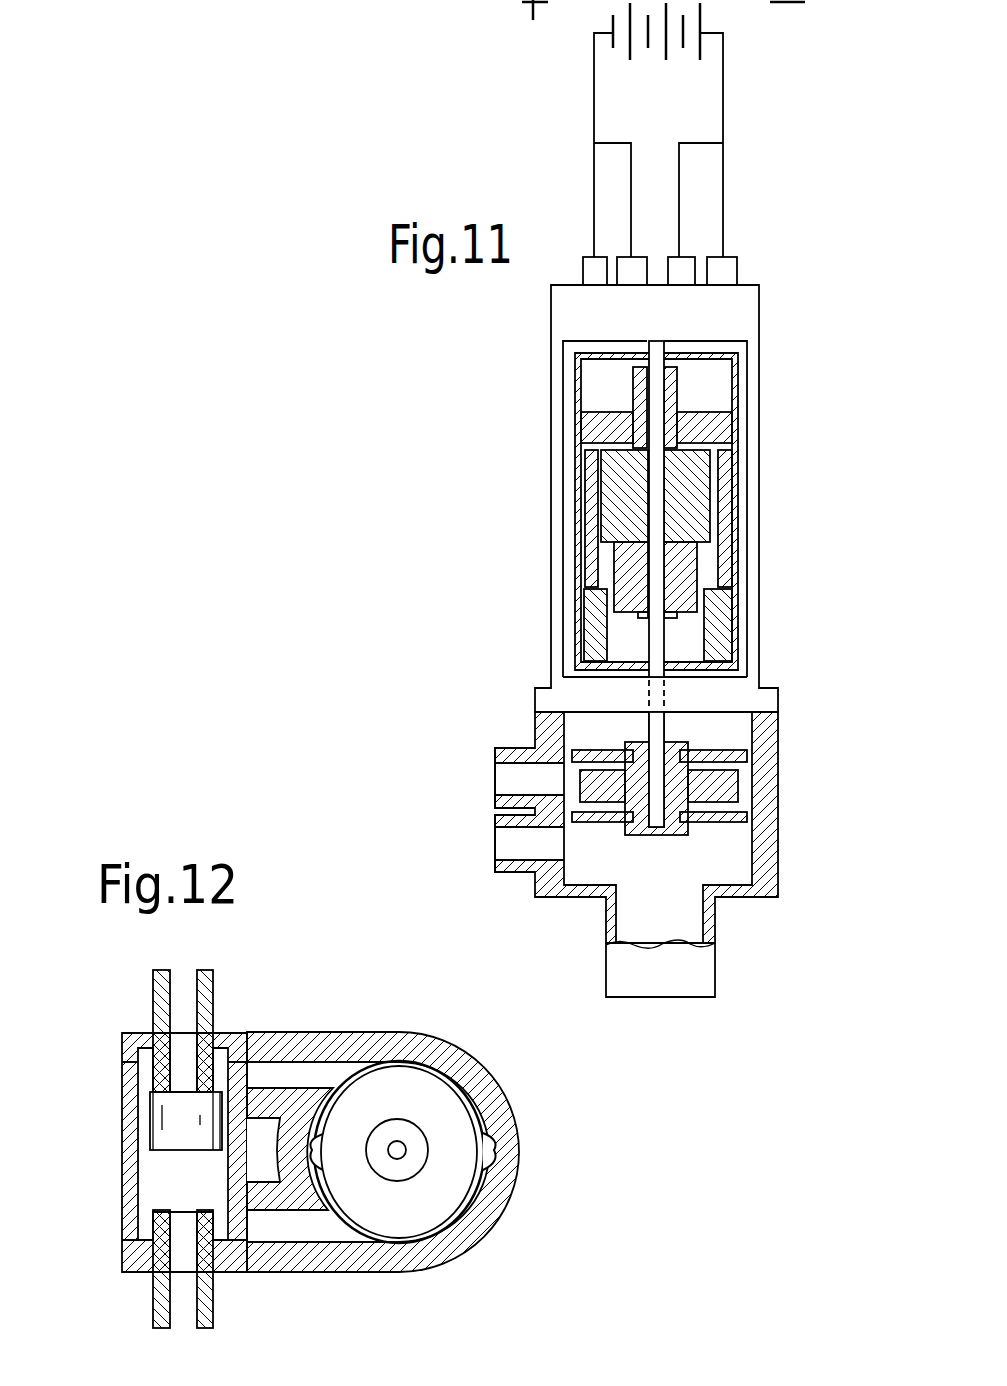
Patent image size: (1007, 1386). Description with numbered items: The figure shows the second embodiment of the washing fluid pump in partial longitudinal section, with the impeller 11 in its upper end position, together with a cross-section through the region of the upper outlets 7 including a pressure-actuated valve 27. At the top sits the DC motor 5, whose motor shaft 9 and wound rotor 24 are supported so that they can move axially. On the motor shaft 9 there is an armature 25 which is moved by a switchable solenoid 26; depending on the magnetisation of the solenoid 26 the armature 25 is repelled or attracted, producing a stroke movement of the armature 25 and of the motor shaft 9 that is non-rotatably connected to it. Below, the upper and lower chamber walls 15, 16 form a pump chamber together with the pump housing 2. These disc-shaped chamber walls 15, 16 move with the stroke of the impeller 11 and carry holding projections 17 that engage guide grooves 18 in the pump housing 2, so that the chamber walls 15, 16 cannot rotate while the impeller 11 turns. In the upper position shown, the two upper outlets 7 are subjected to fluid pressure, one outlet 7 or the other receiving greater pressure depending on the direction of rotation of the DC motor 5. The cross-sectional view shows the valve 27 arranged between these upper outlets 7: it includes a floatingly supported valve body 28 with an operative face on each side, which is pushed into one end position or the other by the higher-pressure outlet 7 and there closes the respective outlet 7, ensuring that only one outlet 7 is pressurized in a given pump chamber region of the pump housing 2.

In FIG. 12, the pump housing 2 is at (496, 1197).
In FIG. 11, the DC motor 5 is at (755, 422).
In FIG. 11, the upper outlets 7 is at (502, 771).
In FIG. 11, the motor shaft 9 is at (658, 832).
In FIG. 11, the impeller 11 is at (740, 780).
In FIG. 11, the upper chamber wall 15 is at (753, 752).
In FIG. 12, the upper chamber wall 15 is at (428, 1210).
In FIG. 11, the lower chamber wall 16 is at (750, 815).
In FIG. 12, the holding projections 17 is at (484, 1114).
In FIG. 12, the guide grooves 18 is at (503, 1148).
In FIG. 11, the rotor 24 is at (693, 513).
In FIG. 11, the armature 25 is at (684, 571).
In FIG. 11, the switchable solenoid 26 is at (720, 630).
In FIG. 12, the fluid pressure-actuated valve 27 is at (113, 1170).
In FIG. 12, the valve body 28 is at (163, 1132).